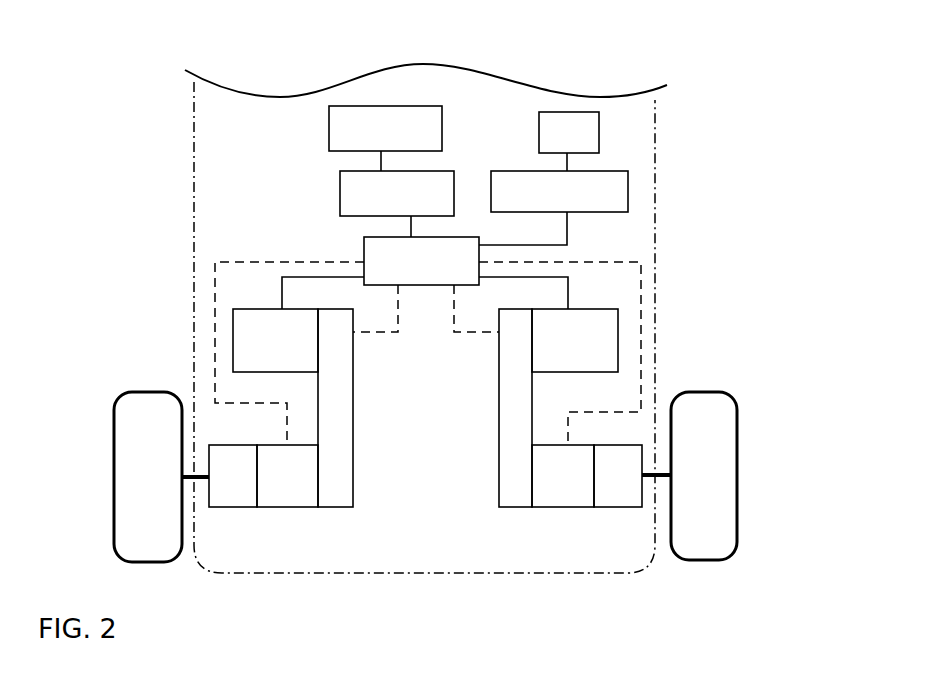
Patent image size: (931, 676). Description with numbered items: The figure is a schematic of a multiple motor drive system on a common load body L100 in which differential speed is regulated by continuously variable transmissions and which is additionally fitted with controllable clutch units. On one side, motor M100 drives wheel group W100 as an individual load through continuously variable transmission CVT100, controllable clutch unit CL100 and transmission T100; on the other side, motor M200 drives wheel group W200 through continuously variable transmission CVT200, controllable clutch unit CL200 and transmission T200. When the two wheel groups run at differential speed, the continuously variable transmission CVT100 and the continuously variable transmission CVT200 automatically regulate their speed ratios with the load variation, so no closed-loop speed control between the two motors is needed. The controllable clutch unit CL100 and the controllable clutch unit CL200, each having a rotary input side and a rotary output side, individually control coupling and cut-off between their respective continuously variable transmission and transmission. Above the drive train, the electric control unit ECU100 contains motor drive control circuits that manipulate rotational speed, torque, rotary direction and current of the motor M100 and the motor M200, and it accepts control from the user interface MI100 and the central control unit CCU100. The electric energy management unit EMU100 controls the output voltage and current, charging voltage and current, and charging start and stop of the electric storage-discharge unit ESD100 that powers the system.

The common load body L100 is at (193, 227).
The electric storage-discharge unit ESD100 is at (385, 138).
The electric energy management unit EMU100 is at (397, 204).
The user interface MI100 is at (547, 130).
The central control unit CCU100 is at (553, 208).
The electric control unit ECU100 is at (428, 341).
The motor M100 is at (275, 340).
The motor M200 is at (575, 340).
The continuously variable transmission CVT100 is at (353, 490).
The continuously variable transmission CVT200 is at (499, 413).
The transmission T100 is at (230, 493).
The transmission T200 is at (620, 497).
The controllable clutch unit CL100 is at (308, 497).
The controllable clutch unit CL200 is at (546, 498).
The wheel group W100 is at (115, 503).
The wheel group W200 is at (738, 498).